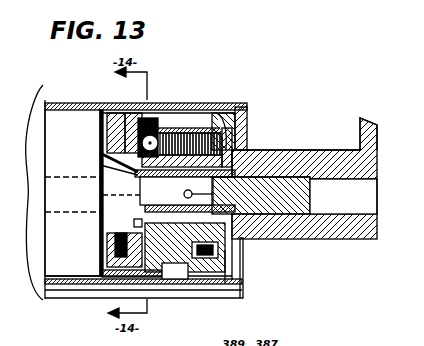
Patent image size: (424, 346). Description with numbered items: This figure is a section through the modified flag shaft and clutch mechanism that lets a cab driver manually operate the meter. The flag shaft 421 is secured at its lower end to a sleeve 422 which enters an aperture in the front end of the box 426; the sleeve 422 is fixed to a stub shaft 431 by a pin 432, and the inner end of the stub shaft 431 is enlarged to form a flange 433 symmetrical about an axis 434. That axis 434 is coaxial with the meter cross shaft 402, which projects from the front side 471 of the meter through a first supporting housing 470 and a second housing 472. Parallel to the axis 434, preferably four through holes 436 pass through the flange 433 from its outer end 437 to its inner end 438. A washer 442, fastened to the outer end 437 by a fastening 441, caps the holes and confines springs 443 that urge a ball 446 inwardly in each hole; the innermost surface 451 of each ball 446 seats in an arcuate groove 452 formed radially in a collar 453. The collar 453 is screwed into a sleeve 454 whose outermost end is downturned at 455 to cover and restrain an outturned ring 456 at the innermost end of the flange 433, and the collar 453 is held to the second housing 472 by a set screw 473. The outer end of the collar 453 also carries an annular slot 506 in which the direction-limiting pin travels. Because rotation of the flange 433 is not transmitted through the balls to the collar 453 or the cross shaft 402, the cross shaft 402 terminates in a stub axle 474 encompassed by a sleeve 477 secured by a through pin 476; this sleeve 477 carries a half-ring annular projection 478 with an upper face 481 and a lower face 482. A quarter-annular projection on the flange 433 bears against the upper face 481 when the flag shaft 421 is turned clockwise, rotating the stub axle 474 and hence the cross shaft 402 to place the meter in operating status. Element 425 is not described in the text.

The cross shaft 402 is at (45, 213).
The front side 471 is at (44, 87).
The box 426 is at (213, 101).
The second housing 472 is at (100, 213).
The ball 446 is at (100, 186).
The first supporting housing 470 is at (73, 278).
The set screw 473 is at (102, 284).
The outturned ring 456 is at (148, 287).
The flange 433 is at (189, 287).
The collar 453 is at (116, 114).
The sleeve 454 is at (130, 114).
The arcuate groove 452 is at (154, 111).
The innermost surface 451 is at (141, 142).
The downturned end 455 is at (159, 123).
The inner end 438 is at (183, 114).
The spring 443 is at (222, 128).
The through hole 436 is at (226, 109).
The outer end 437 is at (246, 117).
The upper face 481 is at (138, 192).
The sleeve 477 is at (170, 178).
The stub axle 474 is at (176, 191).
The sleeve 422 is at (312, 152).
The flag shaft 421 is at (373, 127).
The body top surface 425 is at (266, 152).
The washer 442 is at (247, 143).
The stub shaft 431 is at (266, 240).
The through pin 476 is at (322, 196).
The pin 432 is at (390, 197).
The axis 434 is at (392, 227).
The annular projection 478 is at (149, 224).
The fastening 441 is at (206, 258).
The lower face 482 is at (134, 224).
The annular slot 506 is at (150, 257).